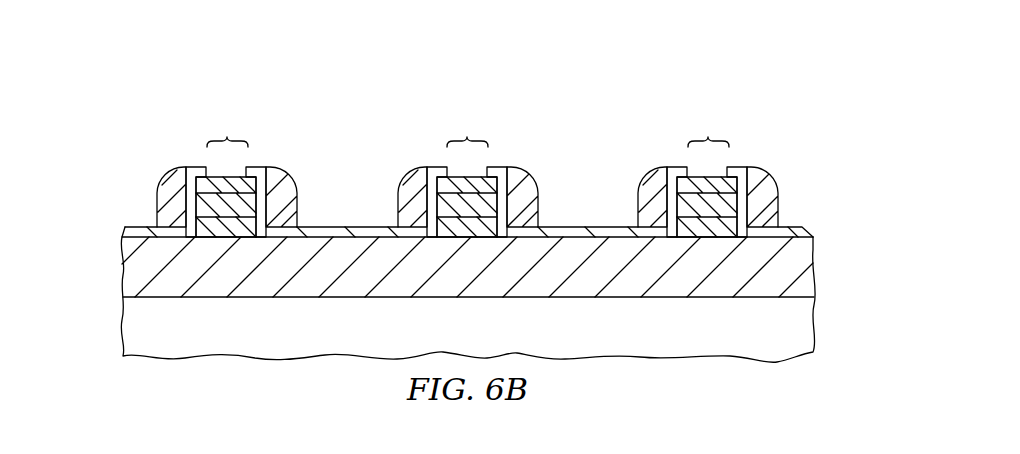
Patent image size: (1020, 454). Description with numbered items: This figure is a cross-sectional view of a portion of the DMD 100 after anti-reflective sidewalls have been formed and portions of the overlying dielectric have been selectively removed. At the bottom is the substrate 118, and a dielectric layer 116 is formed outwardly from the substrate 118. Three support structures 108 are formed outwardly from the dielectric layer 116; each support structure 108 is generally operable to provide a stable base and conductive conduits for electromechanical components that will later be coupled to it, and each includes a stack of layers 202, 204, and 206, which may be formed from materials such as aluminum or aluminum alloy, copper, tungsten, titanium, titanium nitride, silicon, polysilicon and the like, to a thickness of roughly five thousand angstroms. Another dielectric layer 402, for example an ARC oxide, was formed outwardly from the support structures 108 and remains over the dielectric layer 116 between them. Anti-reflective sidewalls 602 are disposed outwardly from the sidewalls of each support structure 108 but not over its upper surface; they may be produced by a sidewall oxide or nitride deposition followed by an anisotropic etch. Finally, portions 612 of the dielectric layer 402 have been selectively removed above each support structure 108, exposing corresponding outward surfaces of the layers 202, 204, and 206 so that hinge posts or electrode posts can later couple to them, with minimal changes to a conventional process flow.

The DMD 100 is at (594, 58).
The support structure 108 is at (186, 131).
The dielectric layer 116 is at (122, 280).
The substrate 118 is at (487, 339).
The layer 202 is at (229, 231).
The layer 204 is at (203, 210).
The layer 206 is at (240, 174).
The dielectric layer 402 is at (123, 229).
The anti-reflective sidewall 602 is at (167, 174).
The selectively removed portion 612 is at (468, 127).